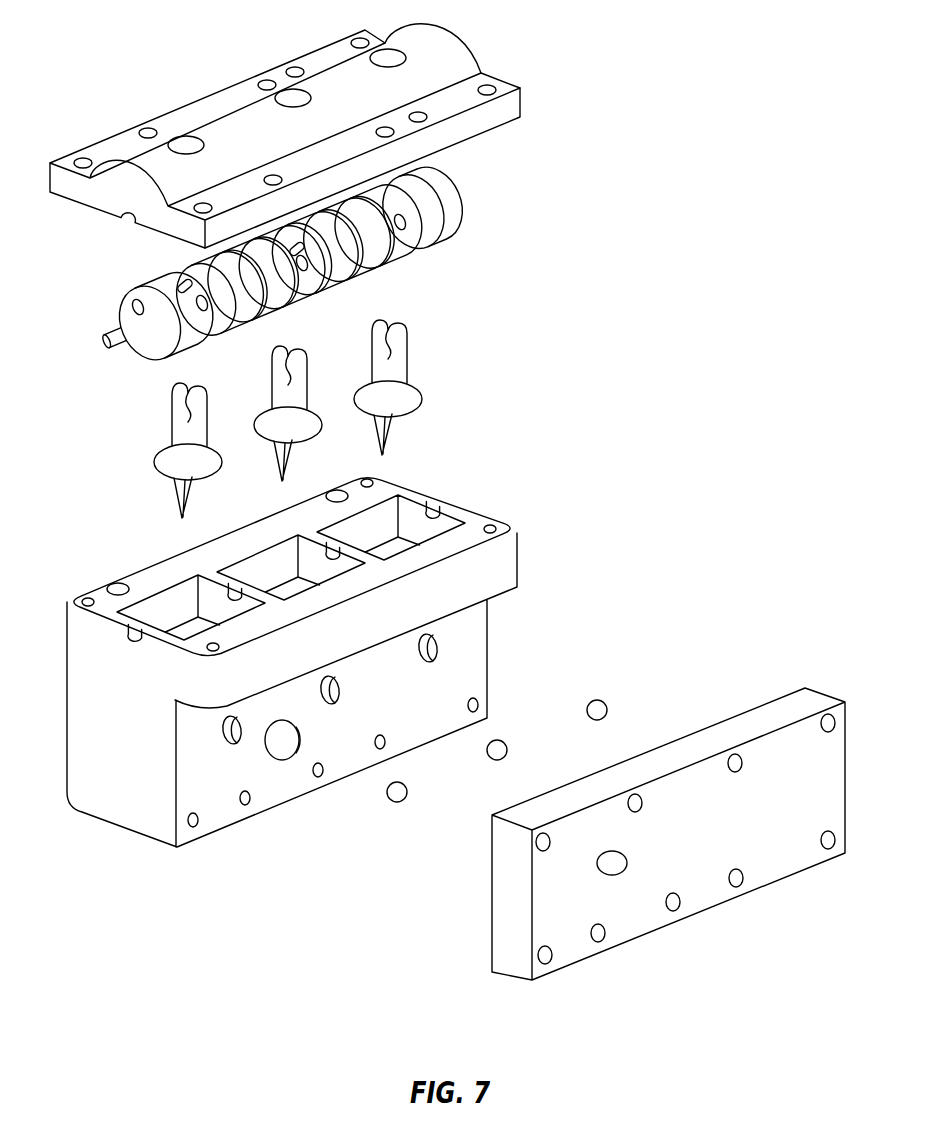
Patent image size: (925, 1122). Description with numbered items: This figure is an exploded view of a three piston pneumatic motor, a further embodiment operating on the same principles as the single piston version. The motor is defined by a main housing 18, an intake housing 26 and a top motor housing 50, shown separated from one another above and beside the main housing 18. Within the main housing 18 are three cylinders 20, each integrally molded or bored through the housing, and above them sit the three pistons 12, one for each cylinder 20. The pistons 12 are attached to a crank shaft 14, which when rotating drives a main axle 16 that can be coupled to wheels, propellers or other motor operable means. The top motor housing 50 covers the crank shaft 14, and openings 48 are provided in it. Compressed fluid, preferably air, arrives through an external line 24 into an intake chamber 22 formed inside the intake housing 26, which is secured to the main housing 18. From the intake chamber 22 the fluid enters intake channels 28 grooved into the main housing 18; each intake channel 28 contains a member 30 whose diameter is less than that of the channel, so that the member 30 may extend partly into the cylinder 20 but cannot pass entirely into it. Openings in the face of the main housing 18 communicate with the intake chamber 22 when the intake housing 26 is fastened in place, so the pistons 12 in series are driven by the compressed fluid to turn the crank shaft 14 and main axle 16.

The piston 12 is at (173, 427).
The crank shaft 14 is at (185, 284).
The main axle 16 is at (105, 344).
The main housing 18 is at (508, 565).
The cylinder 20 is at (163, 608).
The intake chamber 22 is at (283, 745).
The external line 24 is at (620, 860).
The intake housing 26 is at (817, 698).
The intake channel 28 is at (225, 737).
The member 30 is at (397, 793).
The access hole 48 is at (190, 146).
The top motor housing 50 is at (455, 52).